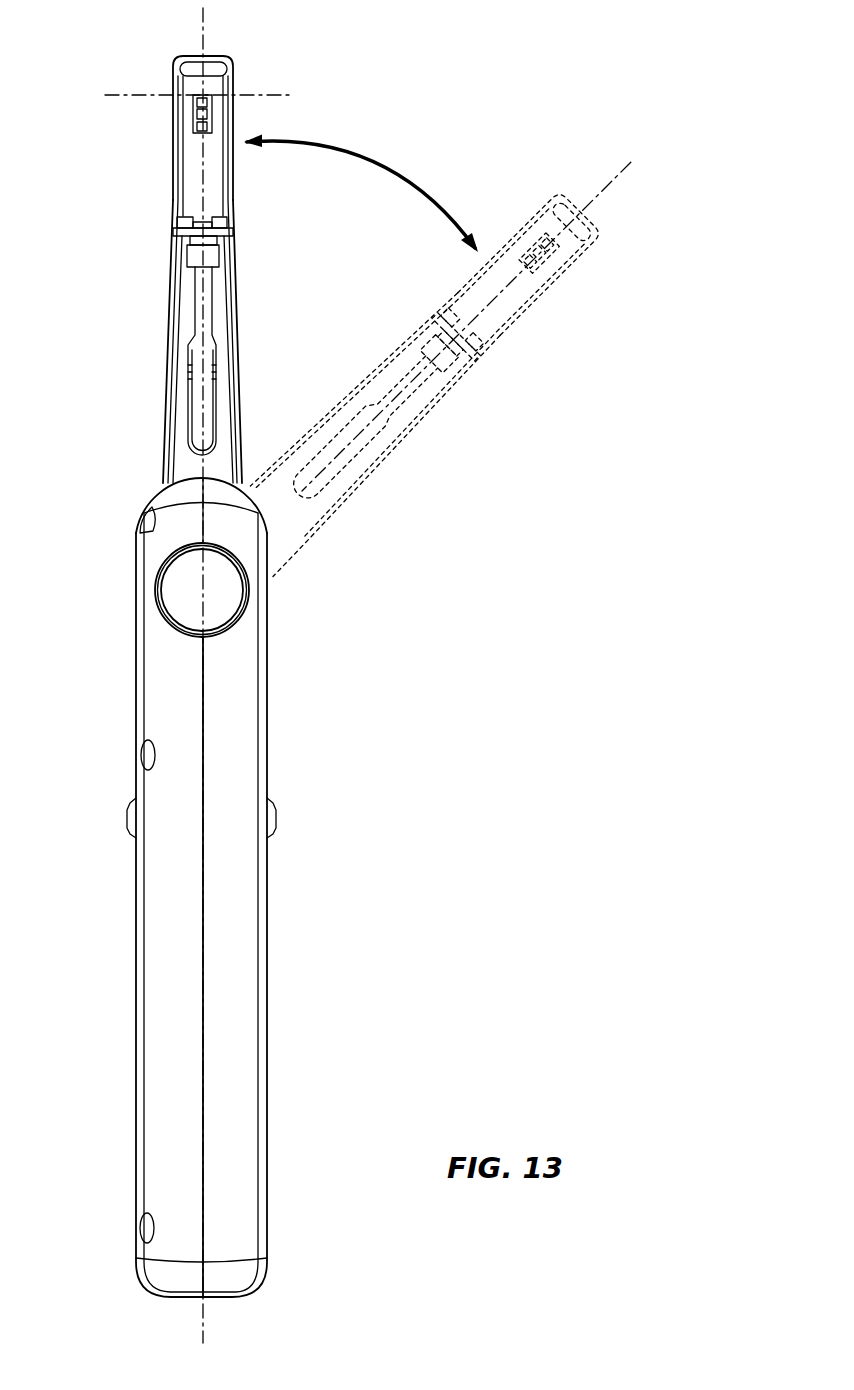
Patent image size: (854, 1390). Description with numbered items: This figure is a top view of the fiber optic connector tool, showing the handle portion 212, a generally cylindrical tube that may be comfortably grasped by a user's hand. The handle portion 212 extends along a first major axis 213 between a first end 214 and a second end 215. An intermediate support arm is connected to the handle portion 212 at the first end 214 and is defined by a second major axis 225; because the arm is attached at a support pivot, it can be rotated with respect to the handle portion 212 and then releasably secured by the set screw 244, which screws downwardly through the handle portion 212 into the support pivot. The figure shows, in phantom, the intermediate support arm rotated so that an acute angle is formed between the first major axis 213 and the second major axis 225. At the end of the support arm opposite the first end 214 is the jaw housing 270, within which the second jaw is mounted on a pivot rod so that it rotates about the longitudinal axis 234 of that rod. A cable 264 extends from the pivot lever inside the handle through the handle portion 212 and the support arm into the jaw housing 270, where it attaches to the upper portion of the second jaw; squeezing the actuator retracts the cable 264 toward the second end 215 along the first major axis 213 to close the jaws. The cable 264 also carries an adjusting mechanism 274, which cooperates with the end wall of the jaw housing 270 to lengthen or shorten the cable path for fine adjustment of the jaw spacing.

The handle portion 212 is at (247, 950).
The first major axis 213 is at (197, 32).
The first end 214 is at (167, 498).
The second end 215 is at (225, 1287).
The second major axis 225 is at (610, 186).
The longitudinal axis 234 is at (274, 95).
The set screw 244 is at (168, 592).
The cable 264 is at (200, 300).
The jaw housing 270 is at (176, 151).
The adjusting mechanism 274 is at (188, 253).